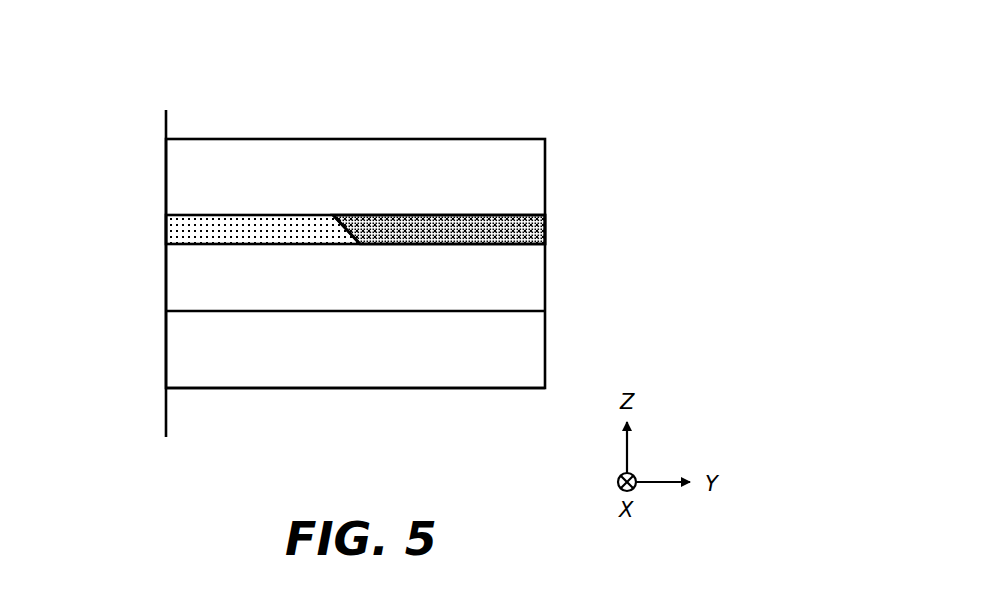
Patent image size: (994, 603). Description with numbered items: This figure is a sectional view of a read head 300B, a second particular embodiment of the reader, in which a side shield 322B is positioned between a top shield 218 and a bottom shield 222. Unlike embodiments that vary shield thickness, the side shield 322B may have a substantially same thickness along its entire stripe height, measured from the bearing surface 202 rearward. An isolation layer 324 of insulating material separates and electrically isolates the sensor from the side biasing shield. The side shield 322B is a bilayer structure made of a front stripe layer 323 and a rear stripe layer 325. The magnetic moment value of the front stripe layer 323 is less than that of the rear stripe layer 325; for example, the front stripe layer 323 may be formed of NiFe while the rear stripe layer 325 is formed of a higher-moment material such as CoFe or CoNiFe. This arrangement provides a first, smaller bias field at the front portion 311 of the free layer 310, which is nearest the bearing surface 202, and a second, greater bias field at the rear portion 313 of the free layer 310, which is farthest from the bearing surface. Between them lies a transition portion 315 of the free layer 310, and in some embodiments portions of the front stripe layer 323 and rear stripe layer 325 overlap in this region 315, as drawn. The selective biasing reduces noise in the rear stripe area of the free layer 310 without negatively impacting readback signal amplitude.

The bearing surface 202 is at (166, 123).
The top shield 218 is at (462, 160).
The bottom shield 222 is at (480, 350).
The isolation layer 324 is at (203, 280).
The free layer 310 is at (367, 156).
The front portion 311 is at (243, 227).
The back portion 313 is at (502, 215).
The transition portion 315 is at (362, 215).
The front stripe layer 323 is at (178, 227).
The rear stripe layer 325 is at (533, 230).
The side shield 322B is at (372, 259).
The read head 300B is at (672, 100).